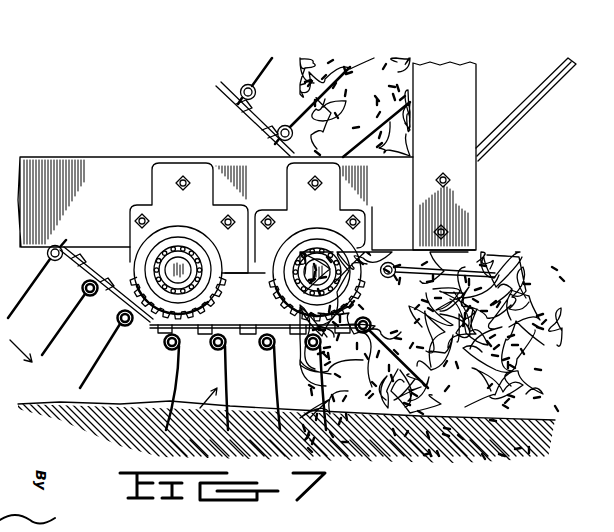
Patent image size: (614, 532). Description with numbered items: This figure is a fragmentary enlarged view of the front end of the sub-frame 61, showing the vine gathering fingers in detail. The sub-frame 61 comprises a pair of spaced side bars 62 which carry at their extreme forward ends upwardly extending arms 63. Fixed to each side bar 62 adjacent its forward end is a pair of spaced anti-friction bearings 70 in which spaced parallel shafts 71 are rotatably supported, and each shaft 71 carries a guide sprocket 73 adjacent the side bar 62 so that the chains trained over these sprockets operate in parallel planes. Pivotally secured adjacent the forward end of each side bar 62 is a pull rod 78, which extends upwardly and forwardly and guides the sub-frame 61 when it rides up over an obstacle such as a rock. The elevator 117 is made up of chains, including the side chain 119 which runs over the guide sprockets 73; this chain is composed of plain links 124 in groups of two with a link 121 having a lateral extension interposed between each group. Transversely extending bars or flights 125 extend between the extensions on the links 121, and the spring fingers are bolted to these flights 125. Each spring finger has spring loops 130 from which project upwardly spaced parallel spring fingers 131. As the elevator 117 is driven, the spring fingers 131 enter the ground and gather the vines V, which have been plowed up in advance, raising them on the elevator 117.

The sub-frame 61 is at (478, 187).
The side bar 62 is at (82, 163).
The upwardly extending arm 63 is at (465, 84).
The anti-friction bearing 70 is at (317, 258).
The shaft 71 is at (305, 276).
The guide sprocket 73 is at (263, 270).
The pull rod 78 is at (543, 88).
The elevator 117 is at (307, 444).
The chain 119 is at (37, 301).
The link 121 is at (245, 117).
The plain link 124 is at (110, 292).
The flight 125 is at (247, 346).
The spring loop 130 is at (172, 342).
The spring finger 131 is at (485, 275).
The vines V is at (480, 333).